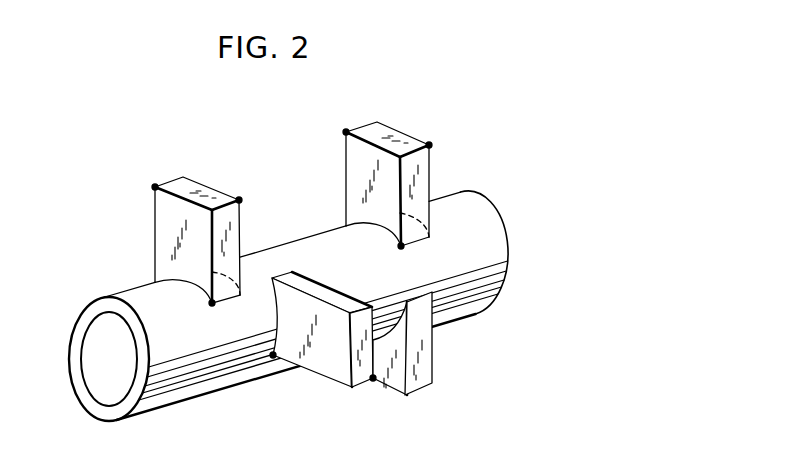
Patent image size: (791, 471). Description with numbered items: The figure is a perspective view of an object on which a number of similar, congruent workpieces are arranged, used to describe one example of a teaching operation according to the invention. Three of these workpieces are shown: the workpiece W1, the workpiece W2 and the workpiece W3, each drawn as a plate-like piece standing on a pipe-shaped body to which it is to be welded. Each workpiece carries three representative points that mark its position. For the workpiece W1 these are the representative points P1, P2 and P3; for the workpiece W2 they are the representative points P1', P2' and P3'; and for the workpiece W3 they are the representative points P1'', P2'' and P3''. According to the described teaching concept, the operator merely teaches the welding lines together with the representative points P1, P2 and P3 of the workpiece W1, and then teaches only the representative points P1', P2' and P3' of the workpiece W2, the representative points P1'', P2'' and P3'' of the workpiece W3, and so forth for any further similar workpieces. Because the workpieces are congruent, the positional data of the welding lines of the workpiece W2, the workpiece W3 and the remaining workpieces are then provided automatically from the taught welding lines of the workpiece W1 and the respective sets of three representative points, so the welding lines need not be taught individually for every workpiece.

The workpiece W1 is at (169, 210).
The workpiece W2 is at (387, 159).
The workpiece W3 is at (349, 358).
The representative point P1 is at (145, 188).
The representative point P2 is at (200, 312).
The representative point P3 is at (251, 199).
The representative point P1' is at (335, 130).
The representative point P2' is at (388, 254).
The representative point P3' is at (440, 147).
The representative point P1'' is at (335, 328).
The representative point P2'' is at (259, 353).
The representative point P3'' is at (365, 393).